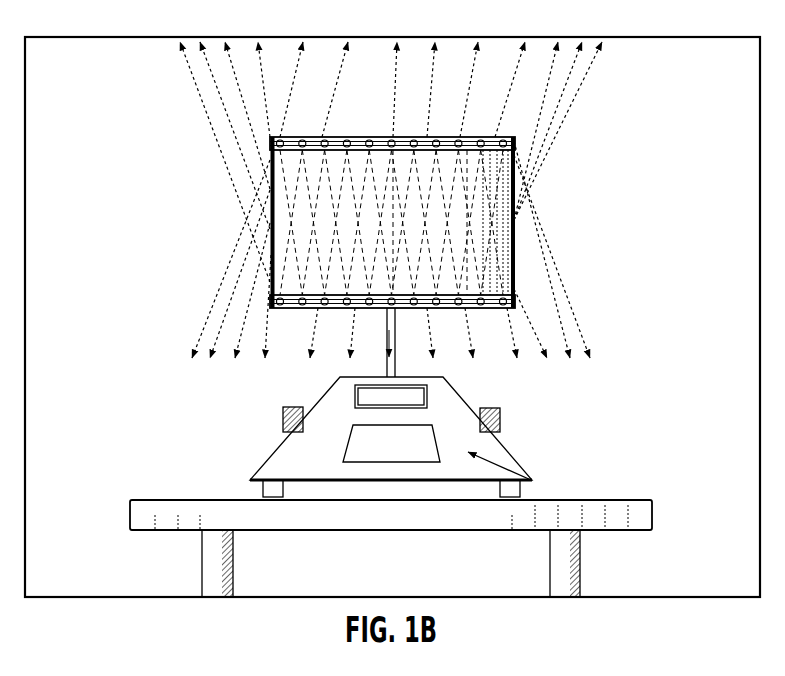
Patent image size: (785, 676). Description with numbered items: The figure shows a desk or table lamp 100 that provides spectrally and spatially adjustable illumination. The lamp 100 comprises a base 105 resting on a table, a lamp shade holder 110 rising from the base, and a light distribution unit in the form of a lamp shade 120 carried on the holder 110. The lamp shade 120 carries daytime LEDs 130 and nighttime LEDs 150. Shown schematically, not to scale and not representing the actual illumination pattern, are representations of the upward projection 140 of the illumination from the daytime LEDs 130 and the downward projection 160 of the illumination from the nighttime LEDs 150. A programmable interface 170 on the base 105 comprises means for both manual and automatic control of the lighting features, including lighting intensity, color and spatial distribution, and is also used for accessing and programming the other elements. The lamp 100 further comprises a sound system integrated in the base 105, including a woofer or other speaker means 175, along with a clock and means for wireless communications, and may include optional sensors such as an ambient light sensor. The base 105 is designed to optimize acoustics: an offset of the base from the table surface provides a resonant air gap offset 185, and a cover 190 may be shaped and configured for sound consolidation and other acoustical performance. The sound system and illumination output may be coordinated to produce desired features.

The desk or table lamp 100 is at (105, 80).
The base 105 is at (513, 451).
The lamp shade holder 110 is at (403, 351).
The lamp shade 120 is at (516, 222).
The daytime LEDs 130 is at (517, 298).
The upward projection 140 is at (568, 78).
The nighttime LEDs 150 is at (264, 146).
The downward projection 160 is at (238, 320).
The programmable interface 170 is at (348, 445).
The speaker means 175 is at (285, 418).
The resonant air gap offset 185 is at (300, 492).
The cover 190 is at (532, 481).